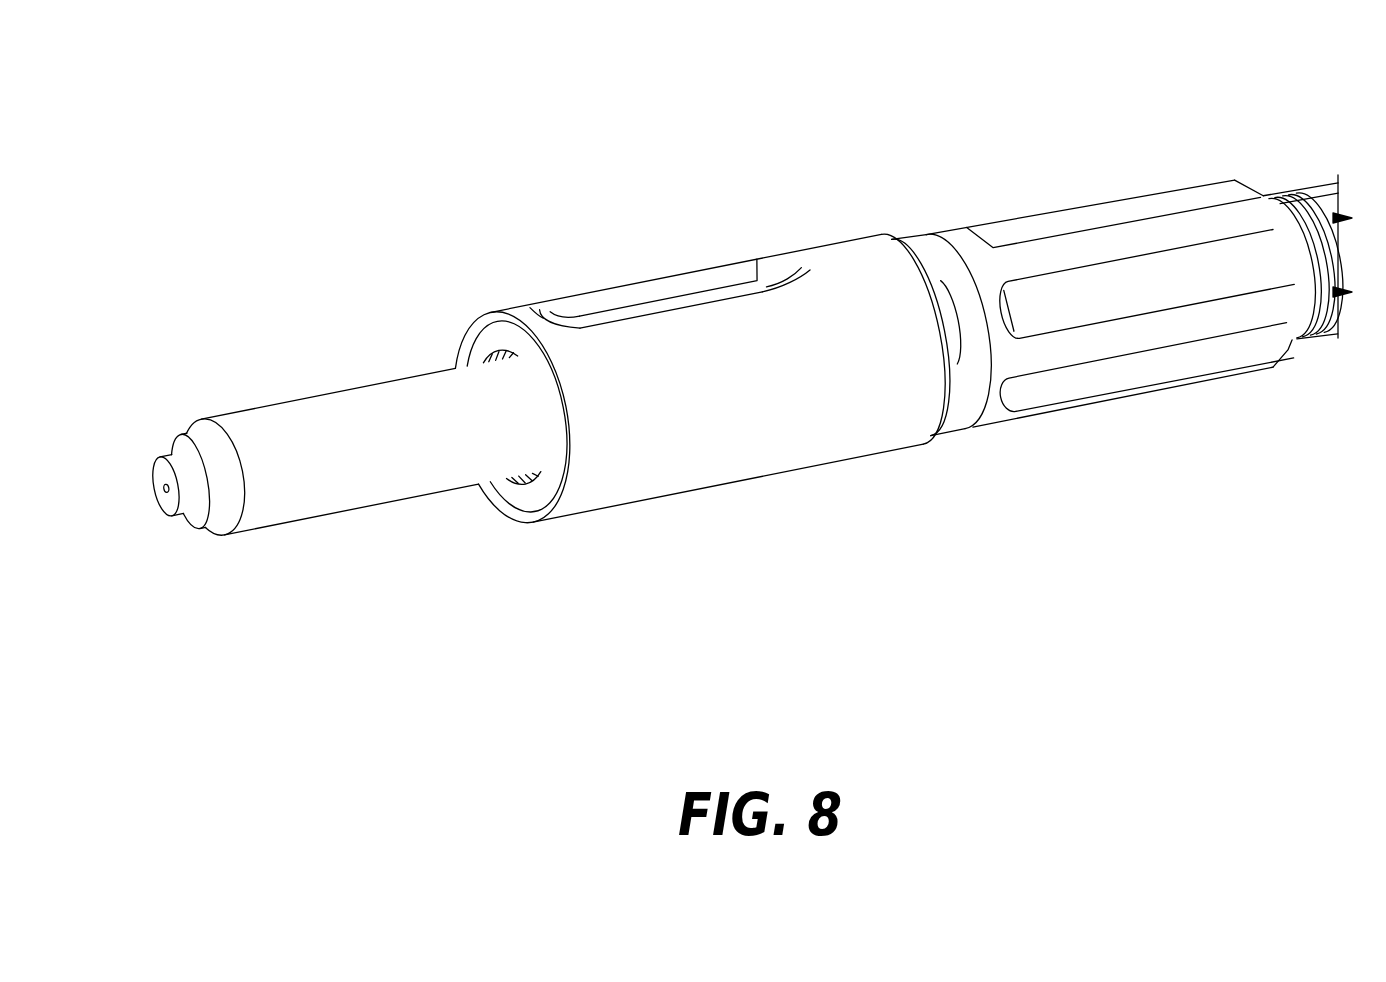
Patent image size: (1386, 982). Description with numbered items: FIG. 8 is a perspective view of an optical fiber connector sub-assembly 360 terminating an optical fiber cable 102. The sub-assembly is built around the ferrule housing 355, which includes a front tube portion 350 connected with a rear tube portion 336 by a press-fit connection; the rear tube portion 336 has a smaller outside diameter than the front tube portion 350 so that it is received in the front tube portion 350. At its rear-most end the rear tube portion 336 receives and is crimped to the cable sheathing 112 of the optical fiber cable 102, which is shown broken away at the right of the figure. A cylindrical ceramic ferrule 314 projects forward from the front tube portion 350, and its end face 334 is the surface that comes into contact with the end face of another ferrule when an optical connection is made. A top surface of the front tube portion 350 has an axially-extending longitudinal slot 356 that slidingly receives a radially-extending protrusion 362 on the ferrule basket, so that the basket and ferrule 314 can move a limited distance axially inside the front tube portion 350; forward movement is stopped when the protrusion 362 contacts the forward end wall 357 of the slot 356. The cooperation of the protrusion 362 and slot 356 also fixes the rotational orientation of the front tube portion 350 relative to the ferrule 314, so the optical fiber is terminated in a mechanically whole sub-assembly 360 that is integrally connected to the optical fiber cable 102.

The optical fiber connector sub-assembly 360 is at (703, 359).
The ferrule housing 355 is at (860, 202).
The forward end wall 357 is at (538, 312).
The protrusion 362 is at (556, 312).
The longitudinal slot 356 is at (658, 290).
The cable sheathing 112 is at (1326, 205).
The optical fiber cable 102 is at (1327, 355).
The rear tube portion 336 is at (1043, 410).
The front tube portion 350 is at (704, 368).
The ferrule 314 is at (293, 510).
The end face 334 is at (173, 492).